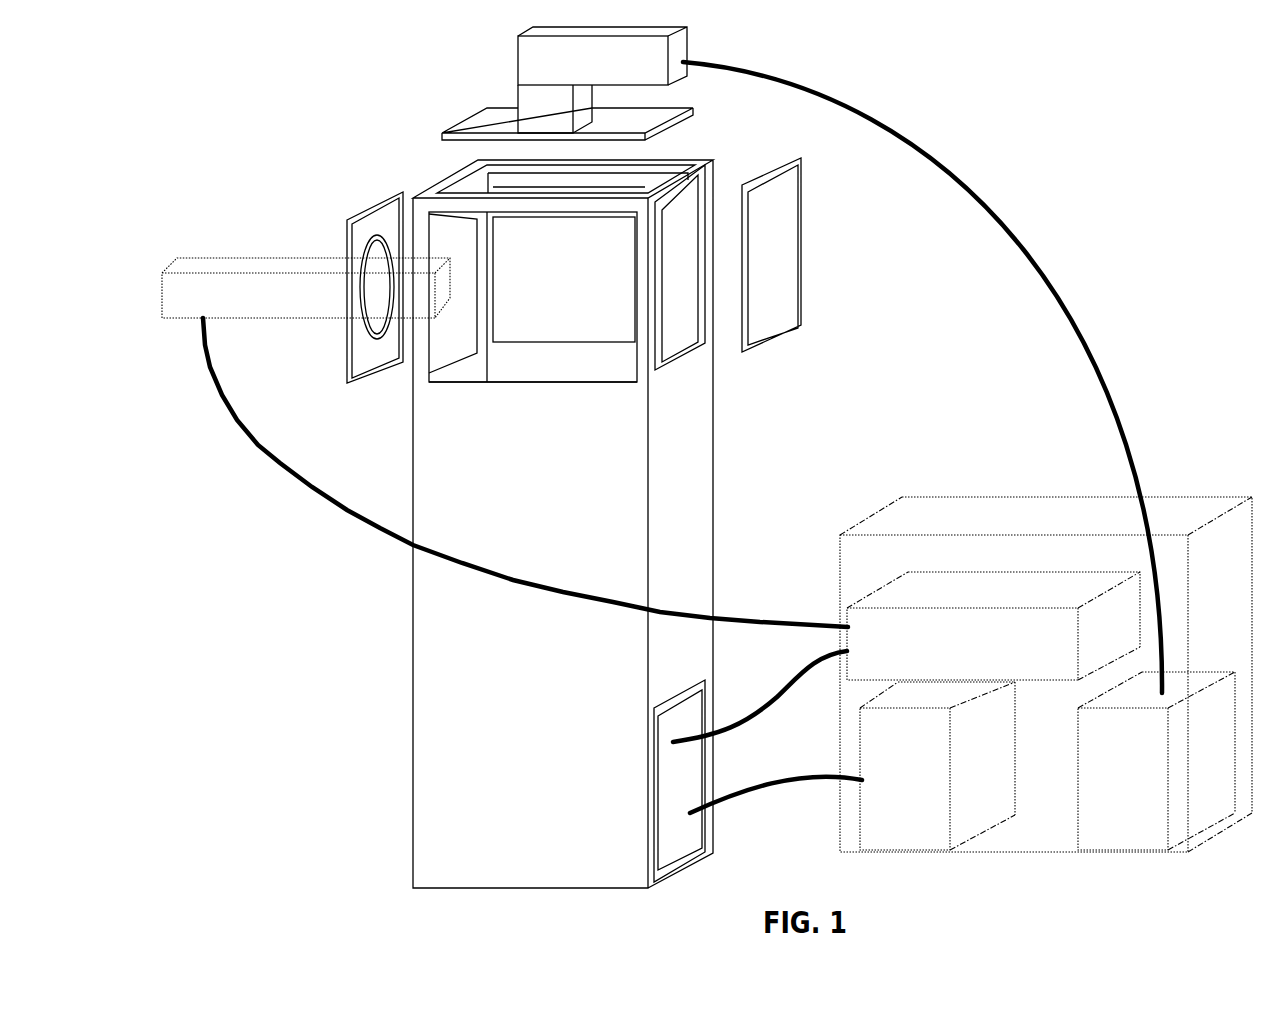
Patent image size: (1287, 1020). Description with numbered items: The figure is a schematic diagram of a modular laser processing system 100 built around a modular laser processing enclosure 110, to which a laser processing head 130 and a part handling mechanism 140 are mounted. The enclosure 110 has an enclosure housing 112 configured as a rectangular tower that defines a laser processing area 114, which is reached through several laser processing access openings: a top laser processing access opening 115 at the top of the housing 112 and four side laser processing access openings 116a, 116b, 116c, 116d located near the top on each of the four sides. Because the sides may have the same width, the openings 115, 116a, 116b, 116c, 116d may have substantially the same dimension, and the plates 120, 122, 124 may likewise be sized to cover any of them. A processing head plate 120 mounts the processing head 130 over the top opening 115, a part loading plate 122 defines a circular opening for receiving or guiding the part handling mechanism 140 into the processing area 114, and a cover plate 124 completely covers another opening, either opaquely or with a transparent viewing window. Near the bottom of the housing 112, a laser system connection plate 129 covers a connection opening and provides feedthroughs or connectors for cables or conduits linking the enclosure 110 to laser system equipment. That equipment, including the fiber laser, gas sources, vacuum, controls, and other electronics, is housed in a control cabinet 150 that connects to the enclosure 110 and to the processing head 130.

The modular laser processing system 100 is at (1133, 97).
The modular laser processing enclosure 110 is at (305, 197).
The enclosure housing 112 is at (417, 605).
The laser processing area 114 is at (533, 297).
The top laser processing access opening 115 is at (646, 188).
The side laser processing access opening 116a is at (455, 356).
The side laser processing access opening 116b is at (593, 323).
The side laser processing access opening 116c is at (638, 368).
The side laser processing access opening 116d is at (688, 322).
The processing head plate 120 is at (455, 127).
The part loading plate 122 is at (346, 377).
The cover plate 124 is at (786, 288).
The laser system connection plate 129 is at (692, 697).
The laser processing head 130 is at (516, 60).
The part handling mechanism 140 is at (188, 323).
The control cabinet 150 is at (905, 496).